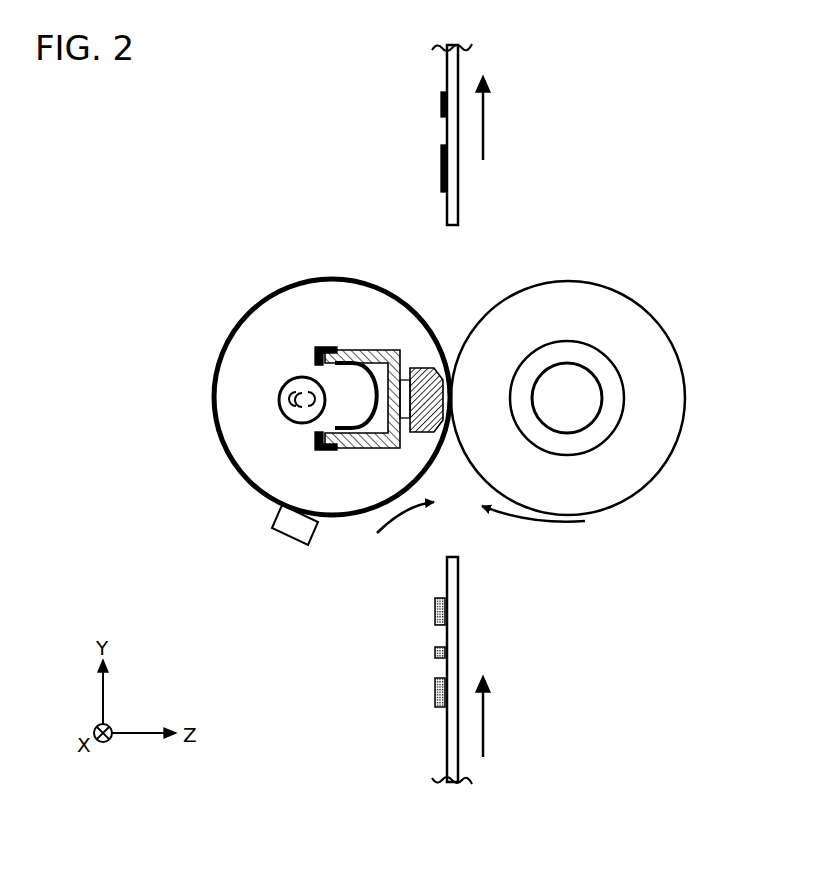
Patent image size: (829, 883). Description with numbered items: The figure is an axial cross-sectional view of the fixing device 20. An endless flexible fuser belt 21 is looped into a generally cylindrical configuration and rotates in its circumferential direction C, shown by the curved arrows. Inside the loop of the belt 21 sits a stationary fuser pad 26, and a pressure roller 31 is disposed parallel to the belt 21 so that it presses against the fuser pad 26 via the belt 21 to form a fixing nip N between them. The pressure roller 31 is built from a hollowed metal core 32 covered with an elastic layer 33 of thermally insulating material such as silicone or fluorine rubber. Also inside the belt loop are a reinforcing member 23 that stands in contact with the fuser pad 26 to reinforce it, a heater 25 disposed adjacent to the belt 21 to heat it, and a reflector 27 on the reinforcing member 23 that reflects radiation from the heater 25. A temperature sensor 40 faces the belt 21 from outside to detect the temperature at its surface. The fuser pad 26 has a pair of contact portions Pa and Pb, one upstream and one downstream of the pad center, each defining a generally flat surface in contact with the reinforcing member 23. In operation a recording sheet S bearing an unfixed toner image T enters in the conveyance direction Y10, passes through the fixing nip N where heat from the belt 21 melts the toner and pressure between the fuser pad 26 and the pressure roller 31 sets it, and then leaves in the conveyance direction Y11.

The fixing device 20 is at (316, 228).
The fuser belt 21 is at (268, 300).
The reinforcing member 23 is at (365, 350).
The heater 25 is at (284, 406).
The fuser pad 26 is at (430, 368).
The reflector 27 is at (318, 372).
The pressure roller 31 is at (590, 377).
The hollowed core 32 is at (583, 352).
The elastic layer 33 is at (540, 290).
The temperature sensor 40 is at (293, 530).
The recording sheet S is at (448, 70).
The toner image T is at (438, 165).
The fixing nip N is at (449, 396).
The circumferential direction C is at (481, 526).
The upstream contact portion Pa is at (403, 432).
The downstream contact portion Pb is at (402, 372).
The conveyance direction Y10 is at (502, 716).
The conveyance direction Y11 is at (502, 118).